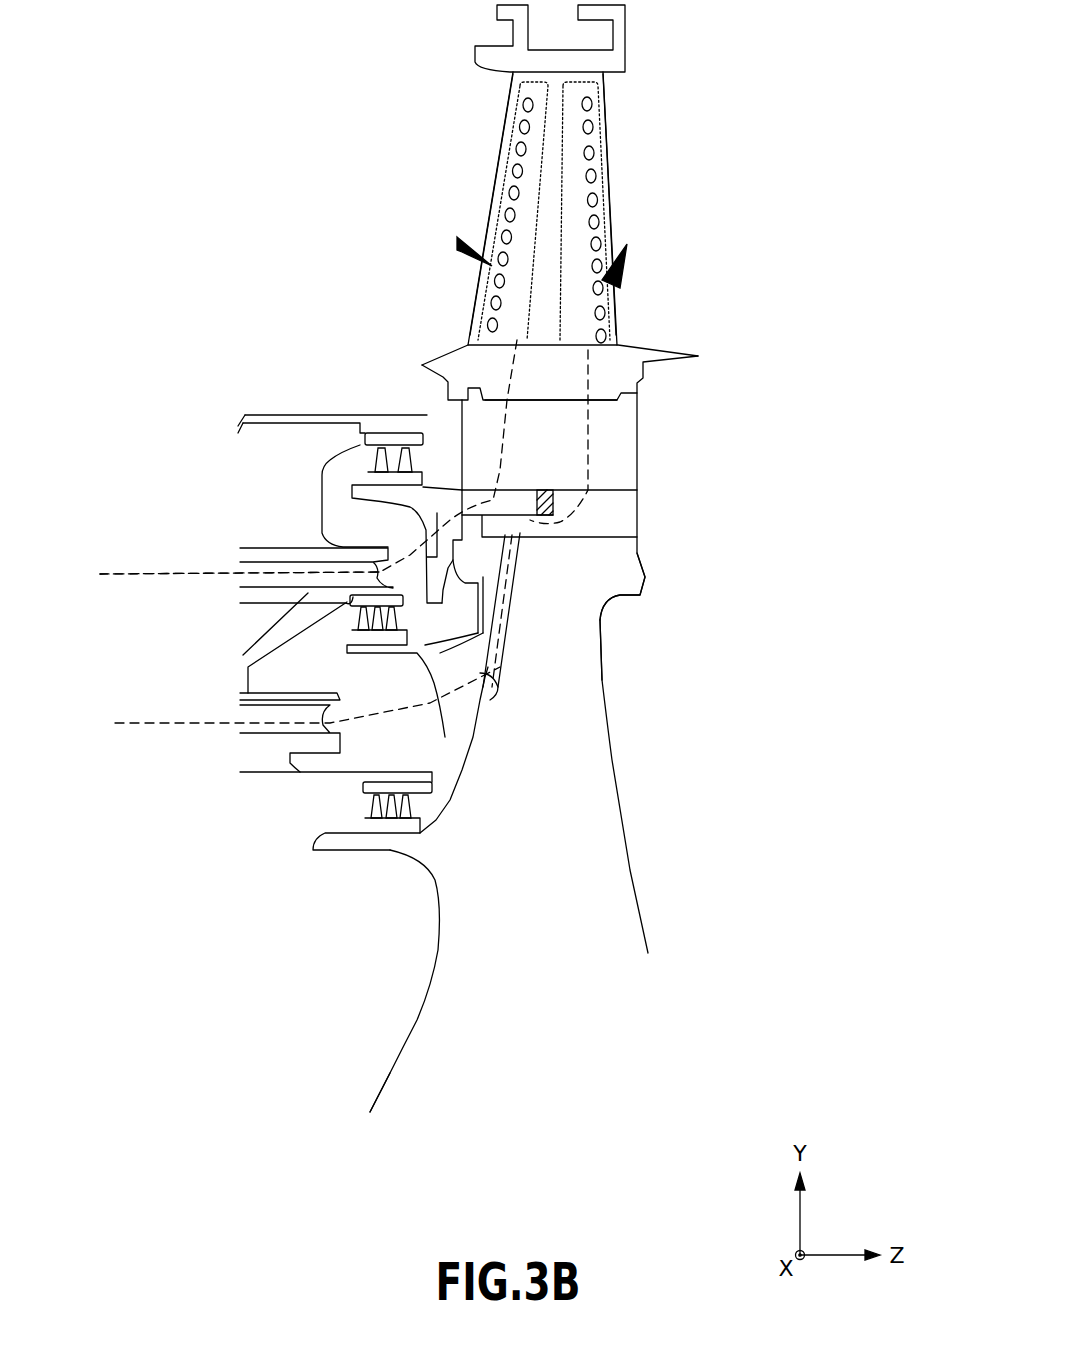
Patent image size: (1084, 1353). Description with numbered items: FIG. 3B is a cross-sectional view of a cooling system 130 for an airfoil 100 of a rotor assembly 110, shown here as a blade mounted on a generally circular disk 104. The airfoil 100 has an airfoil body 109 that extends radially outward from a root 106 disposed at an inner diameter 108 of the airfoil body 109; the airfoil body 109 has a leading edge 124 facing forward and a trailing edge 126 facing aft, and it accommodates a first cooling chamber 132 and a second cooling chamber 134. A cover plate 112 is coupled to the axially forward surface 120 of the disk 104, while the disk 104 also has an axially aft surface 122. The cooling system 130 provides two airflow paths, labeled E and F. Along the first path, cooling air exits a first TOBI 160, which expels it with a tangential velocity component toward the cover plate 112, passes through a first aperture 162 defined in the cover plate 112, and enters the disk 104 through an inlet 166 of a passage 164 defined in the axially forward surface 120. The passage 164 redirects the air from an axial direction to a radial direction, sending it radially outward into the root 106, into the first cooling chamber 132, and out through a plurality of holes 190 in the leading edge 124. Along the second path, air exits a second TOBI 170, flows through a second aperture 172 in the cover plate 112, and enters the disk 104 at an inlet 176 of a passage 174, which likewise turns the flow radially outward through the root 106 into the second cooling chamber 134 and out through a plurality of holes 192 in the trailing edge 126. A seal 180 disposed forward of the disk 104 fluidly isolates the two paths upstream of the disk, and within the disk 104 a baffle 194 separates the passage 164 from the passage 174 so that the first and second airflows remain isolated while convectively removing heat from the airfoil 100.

The airfoil 100 is at (632, 87).
The disk 104 is at (520, 962).
The root 106 is at (700, 354).
The inner diameter 108 is at (548, 349).
The airfoil body 109 is at (740, 85).
The rotor assembly 110 is at (705, 1135).
The cover plate 112 is at (437, 520).
The axially forward surface 120 is at (405, 1045).
The axially aft surface 122 is at (630, 888).
The leading edge 124 is at (503, 125).
The trailing edge 126 is at (607, 140).
The cooling system 130 is at (216, 161).
The first cooling chamber 132 is at (520, 184).
The second cooling chamber 134 is at (575, 210).
The first TOBI 160 is at (255, 550).
The first aperture 162 is at (410, 507).
The passage 164 is at (522, 510).
The inlet 166 is at (428, 487).
The second TOBI 170 is at (281, 733).
The second aperture 172 is at (480, 677).
The passage 174 is at (600, 502).
The inlet 176 is at (478, 675).
The seal 180 is at (350, 773).
The holes 190 is at (493, 306).
The holes 192 is at (597, 310).
The baffle 194 is at (553, 490).